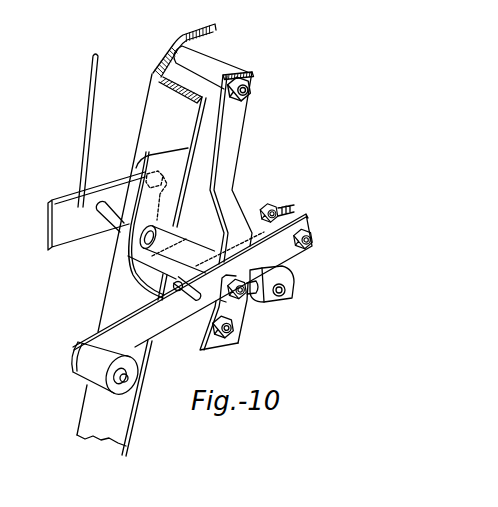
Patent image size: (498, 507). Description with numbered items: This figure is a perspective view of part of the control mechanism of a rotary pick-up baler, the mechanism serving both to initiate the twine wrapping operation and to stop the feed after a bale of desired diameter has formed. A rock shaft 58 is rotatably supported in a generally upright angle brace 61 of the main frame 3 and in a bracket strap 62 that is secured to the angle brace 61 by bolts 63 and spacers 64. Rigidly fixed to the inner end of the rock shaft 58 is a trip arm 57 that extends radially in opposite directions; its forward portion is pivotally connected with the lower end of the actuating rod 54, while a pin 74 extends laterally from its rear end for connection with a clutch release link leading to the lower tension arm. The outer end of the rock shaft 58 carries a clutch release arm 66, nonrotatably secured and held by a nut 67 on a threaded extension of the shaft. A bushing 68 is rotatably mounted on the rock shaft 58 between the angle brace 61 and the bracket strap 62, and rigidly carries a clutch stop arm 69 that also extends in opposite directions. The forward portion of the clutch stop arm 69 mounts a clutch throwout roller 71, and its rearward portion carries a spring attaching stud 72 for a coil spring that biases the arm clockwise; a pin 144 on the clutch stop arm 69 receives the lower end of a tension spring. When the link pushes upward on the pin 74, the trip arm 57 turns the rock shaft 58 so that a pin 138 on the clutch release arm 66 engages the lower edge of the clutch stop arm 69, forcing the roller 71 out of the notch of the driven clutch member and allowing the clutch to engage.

The main frame 3 is at (106, 303).
The actuating rod 54 is at (92, 107).
The trip arm 57 is at (58, 249).
The rock shaft 58 is at (109, 228).
The angle brace 61 is at (212, 45).
The bracket strap 62 is at (241, 137).
The bolts 63 is at (253, 91).
The spacers 64 is at (237, 332).
The clutch release arm 66 is at (292, 275).
The nut 67 is at (239, 299).
The bushing 68 is at (174, 236).
The clutch stop arm 69 is at (311, 225).
The clutch throwout roller 71 is at (91, 372).
The spring attaching stud 72 is at (284, 218).
The pin 74 is at (168, 185).
The pin 138 is at (286, 290).
The pin 144 is at (186, 280).